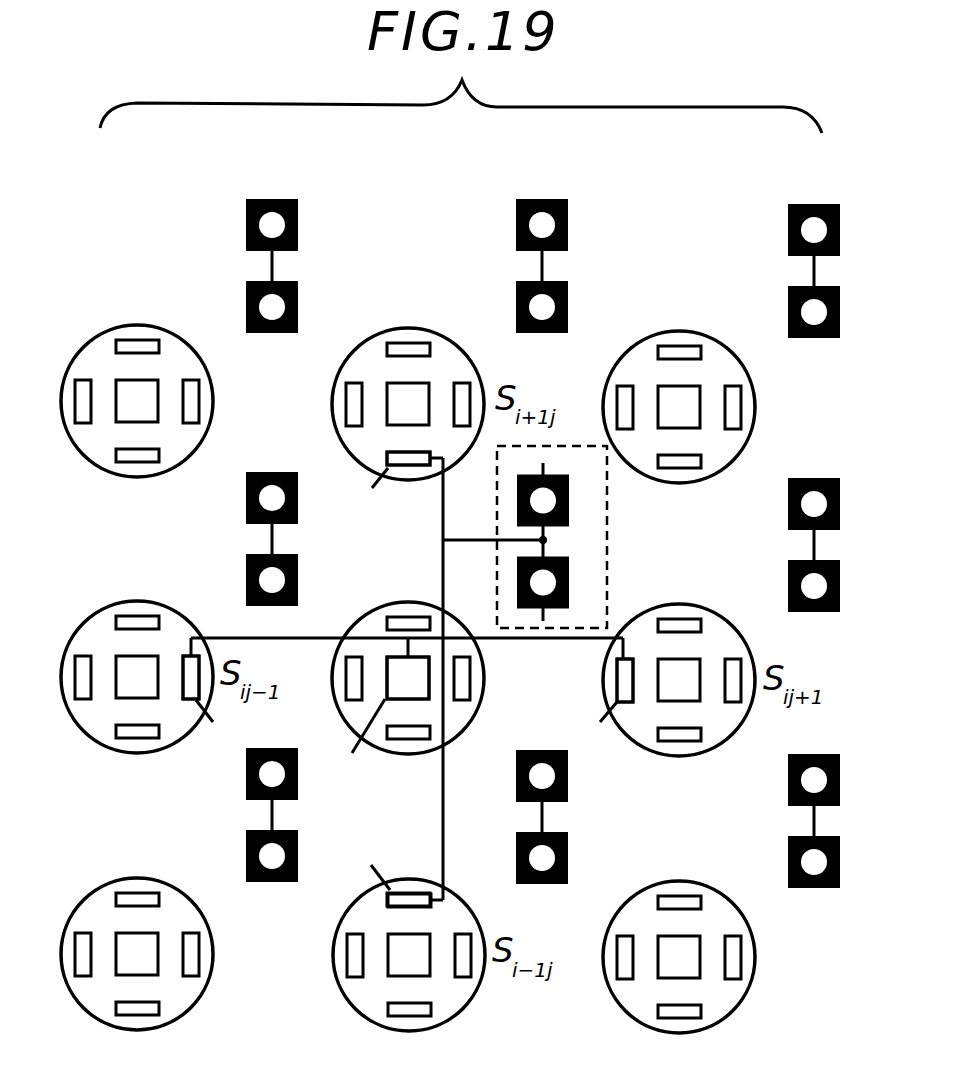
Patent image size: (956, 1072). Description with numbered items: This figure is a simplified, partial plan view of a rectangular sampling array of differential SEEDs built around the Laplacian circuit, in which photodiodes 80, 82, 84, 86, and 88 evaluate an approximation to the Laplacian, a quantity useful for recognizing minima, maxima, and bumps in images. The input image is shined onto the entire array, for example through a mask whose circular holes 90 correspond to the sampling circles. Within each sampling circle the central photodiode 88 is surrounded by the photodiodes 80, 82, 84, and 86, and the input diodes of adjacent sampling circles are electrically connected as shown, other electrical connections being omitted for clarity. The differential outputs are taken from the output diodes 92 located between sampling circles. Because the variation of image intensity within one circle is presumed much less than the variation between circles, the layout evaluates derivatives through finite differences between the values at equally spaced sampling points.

The photodiode 80 is at (400, 892).
The photodiode 82 is at (187, 697).
The photodiode 84 is at (387, 458).
The photodiode 86 is at (630, 703).
The photodiode 88 is at (386, 697).
The circular hole 90 is at (125, 324).
The output diode 92 is at (607, 503).